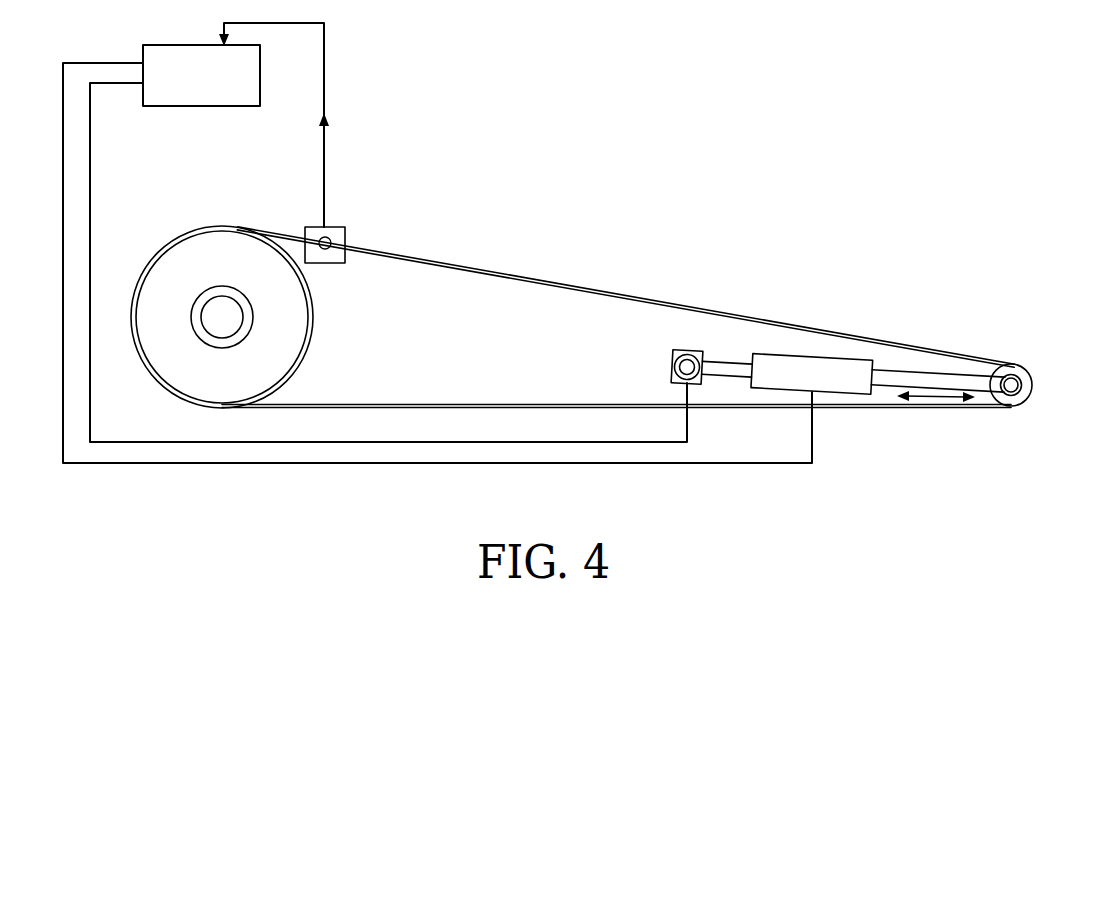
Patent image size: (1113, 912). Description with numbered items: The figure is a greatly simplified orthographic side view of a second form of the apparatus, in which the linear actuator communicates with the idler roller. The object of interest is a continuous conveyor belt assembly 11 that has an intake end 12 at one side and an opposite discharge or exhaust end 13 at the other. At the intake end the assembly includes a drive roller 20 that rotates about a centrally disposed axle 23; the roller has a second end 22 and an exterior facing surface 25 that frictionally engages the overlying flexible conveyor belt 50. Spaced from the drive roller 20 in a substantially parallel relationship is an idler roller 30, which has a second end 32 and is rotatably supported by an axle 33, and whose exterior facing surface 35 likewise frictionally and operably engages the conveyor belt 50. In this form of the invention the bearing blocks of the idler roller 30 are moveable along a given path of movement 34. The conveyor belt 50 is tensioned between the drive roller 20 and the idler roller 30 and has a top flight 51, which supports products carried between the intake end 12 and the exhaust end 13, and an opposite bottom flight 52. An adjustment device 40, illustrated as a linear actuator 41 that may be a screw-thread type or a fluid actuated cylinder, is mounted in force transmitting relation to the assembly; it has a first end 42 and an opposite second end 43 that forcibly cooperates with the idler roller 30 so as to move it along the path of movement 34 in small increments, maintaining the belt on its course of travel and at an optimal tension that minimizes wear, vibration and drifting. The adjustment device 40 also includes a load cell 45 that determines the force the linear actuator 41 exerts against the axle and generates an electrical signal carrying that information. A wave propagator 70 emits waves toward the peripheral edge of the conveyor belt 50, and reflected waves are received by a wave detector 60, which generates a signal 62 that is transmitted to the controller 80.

The continuous conveyor belt assembly 11 is at (792, 276).
The intake end 12 is at (242, 288).
The discharge end 13 is at (995, 355).
The drive roller 20 is at (295, 308).
The second end 22 is at (285, 350).
The axle 23 is at (217, 313).
The exterior facing surface 25 is at (148, 263).
The idler roller 30 is at (1025, 375).
The second end 32 is at (1018, 400).
The axle 33 is at (1015, 378).
The path of movement 34 is at (937, 400).
The exterior facing surface 35 is at (990, 370).
The adjustment device 40 is at (800, 377).
The linear actuator 41 is at (809, 408).
The first end 42 is at (735, 350).
The second end 43 is at (936, 423).
The load cell 45 is at (651, 357).
The conveyor belt 50 is at (618, 331).
The top flight 51 is at (890, 340).
The bottom flight 52 is at (735, 408).
The wave detector 60 is at (354, 204).
The signal 62 is at (327, 67).
The wave propagator 70 is at (340, 237).
The controller 80 is at (189, 86).